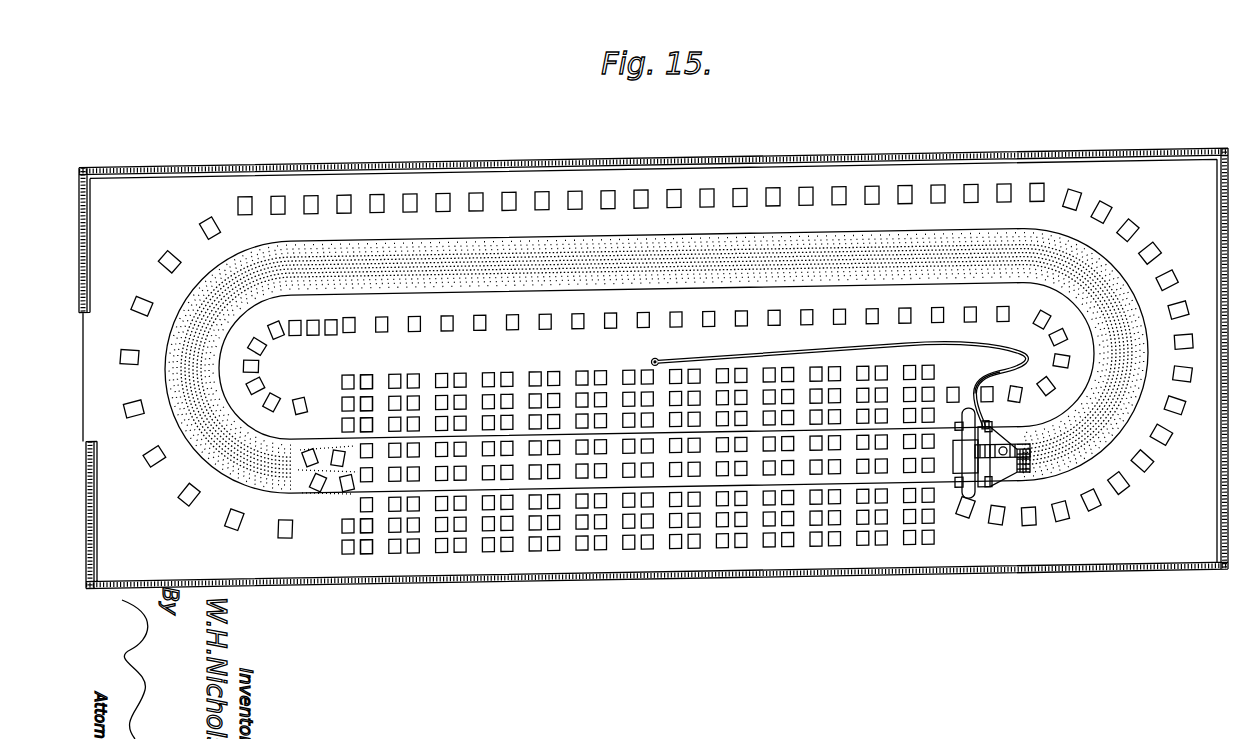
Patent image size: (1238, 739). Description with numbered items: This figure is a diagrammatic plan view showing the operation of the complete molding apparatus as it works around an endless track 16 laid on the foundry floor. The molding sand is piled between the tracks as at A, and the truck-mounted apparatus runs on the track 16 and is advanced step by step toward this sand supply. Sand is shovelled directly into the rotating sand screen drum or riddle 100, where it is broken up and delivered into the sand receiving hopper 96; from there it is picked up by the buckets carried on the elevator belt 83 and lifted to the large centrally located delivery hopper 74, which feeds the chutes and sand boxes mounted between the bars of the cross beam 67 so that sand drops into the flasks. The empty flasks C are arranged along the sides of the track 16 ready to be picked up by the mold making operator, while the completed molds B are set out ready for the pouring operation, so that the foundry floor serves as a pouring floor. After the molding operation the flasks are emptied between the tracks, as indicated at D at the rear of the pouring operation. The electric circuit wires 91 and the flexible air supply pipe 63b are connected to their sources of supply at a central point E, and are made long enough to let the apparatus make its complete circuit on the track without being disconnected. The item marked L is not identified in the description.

The molding sand pile A is at (495, 263).
The completed molds B is at (585, 560).
The empty flasks C is at (838, 201).
The emptied flasks location D is at (300, 475).
The central supply point E is at (648, 373).
The track 16 is at (808, 249).
The flexible air supply pipe 63b is at (912, 358).
The cross beam 67 is at (968, 500).
The delivery hopper 74 is at (954, 462).
The elevator belt 83 is at (958, 447).
The circuit wires 91 is at (980, 363).
The sand receiving hopper 96 is at (1040, 469).
The sand screen drum or riddle 100 is at (1032, 459).
The lever L is at (984, 486).